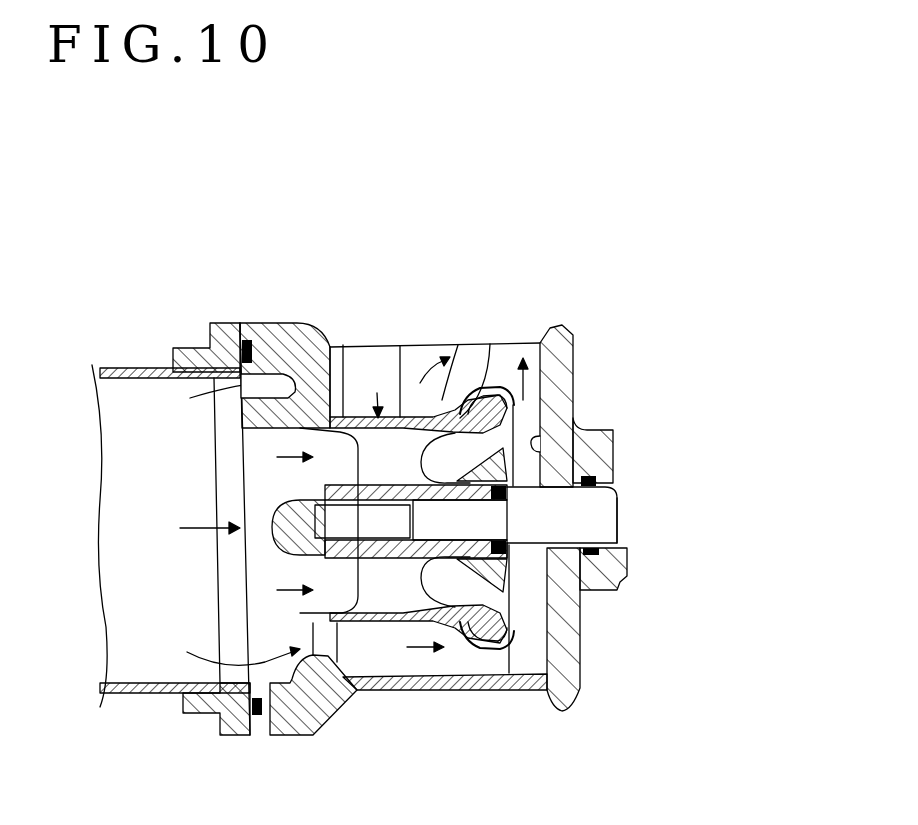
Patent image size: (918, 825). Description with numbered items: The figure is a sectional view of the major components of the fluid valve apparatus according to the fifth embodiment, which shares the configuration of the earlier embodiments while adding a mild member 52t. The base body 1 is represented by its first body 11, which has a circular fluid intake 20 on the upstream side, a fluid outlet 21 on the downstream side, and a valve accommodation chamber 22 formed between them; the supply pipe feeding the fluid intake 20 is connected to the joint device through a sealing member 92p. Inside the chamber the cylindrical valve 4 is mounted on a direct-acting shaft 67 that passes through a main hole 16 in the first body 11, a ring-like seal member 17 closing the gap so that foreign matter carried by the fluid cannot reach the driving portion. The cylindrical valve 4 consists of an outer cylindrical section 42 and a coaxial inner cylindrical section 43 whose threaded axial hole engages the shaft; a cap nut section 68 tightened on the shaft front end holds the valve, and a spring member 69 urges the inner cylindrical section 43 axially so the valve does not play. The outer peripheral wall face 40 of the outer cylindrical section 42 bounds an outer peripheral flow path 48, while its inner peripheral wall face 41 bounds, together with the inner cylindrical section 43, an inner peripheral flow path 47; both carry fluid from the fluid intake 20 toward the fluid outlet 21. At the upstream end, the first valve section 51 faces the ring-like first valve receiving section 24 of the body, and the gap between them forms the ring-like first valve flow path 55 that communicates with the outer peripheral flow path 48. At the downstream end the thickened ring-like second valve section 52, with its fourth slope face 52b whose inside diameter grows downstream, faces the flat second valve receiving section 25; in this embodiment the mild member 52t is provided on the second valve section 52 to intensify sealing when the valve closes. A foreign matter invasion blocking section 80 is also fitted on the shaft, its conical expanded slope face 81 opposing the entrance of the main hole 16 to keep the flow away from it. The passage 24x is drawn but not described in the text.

The base body 1 is at (623, 590).
The cylindrical valve 4 is at (377, 393).
The first body 11 is at (583, 658).
The main hole 16 is at (620, 495).
The seal member 17 is at (620, 557).
The fluid intake 20 is at (233, 477).
The fluid outlet 21 is at (490, 344).
The valve accommodation chamber 22 is at (460, 668).
The first valve receiving section 24 is at (315, 345).
The communication passage 24x is at (207, 342).
The second valve receiving section 25 is at (613, 433).
The outer peripheral wall face 40 is at (343, 345).
The inner peripheral wall face 41 is at (273, 437).
The outer cylindrical section 42 is at (400, 346).
The inner cylindrical section 43 is at (406, 539).
The inner peripheral flow path 47 is at (380, 623).
The outer peripheral flow path 48 is at (458, 345).
The first valve section 51 is at (267, 413).
The second valve section 52 is at (573, 343).
The fourth slope face 52b is at (541, 447).
The mild member 52t is at (512, 402).
The first valve flow path 55 is at (297, 323).
The direct-acting shaft 67 is at (603, 518).
The cap nut section 68 is at (290, 527).
The spring member 69 is at (595, 545).
The foreign matter invasion blocking section 80 is at (583, 607).
The expanded slope face 81 is at (478, 468).
The sealing member 92p is at (223, 727).